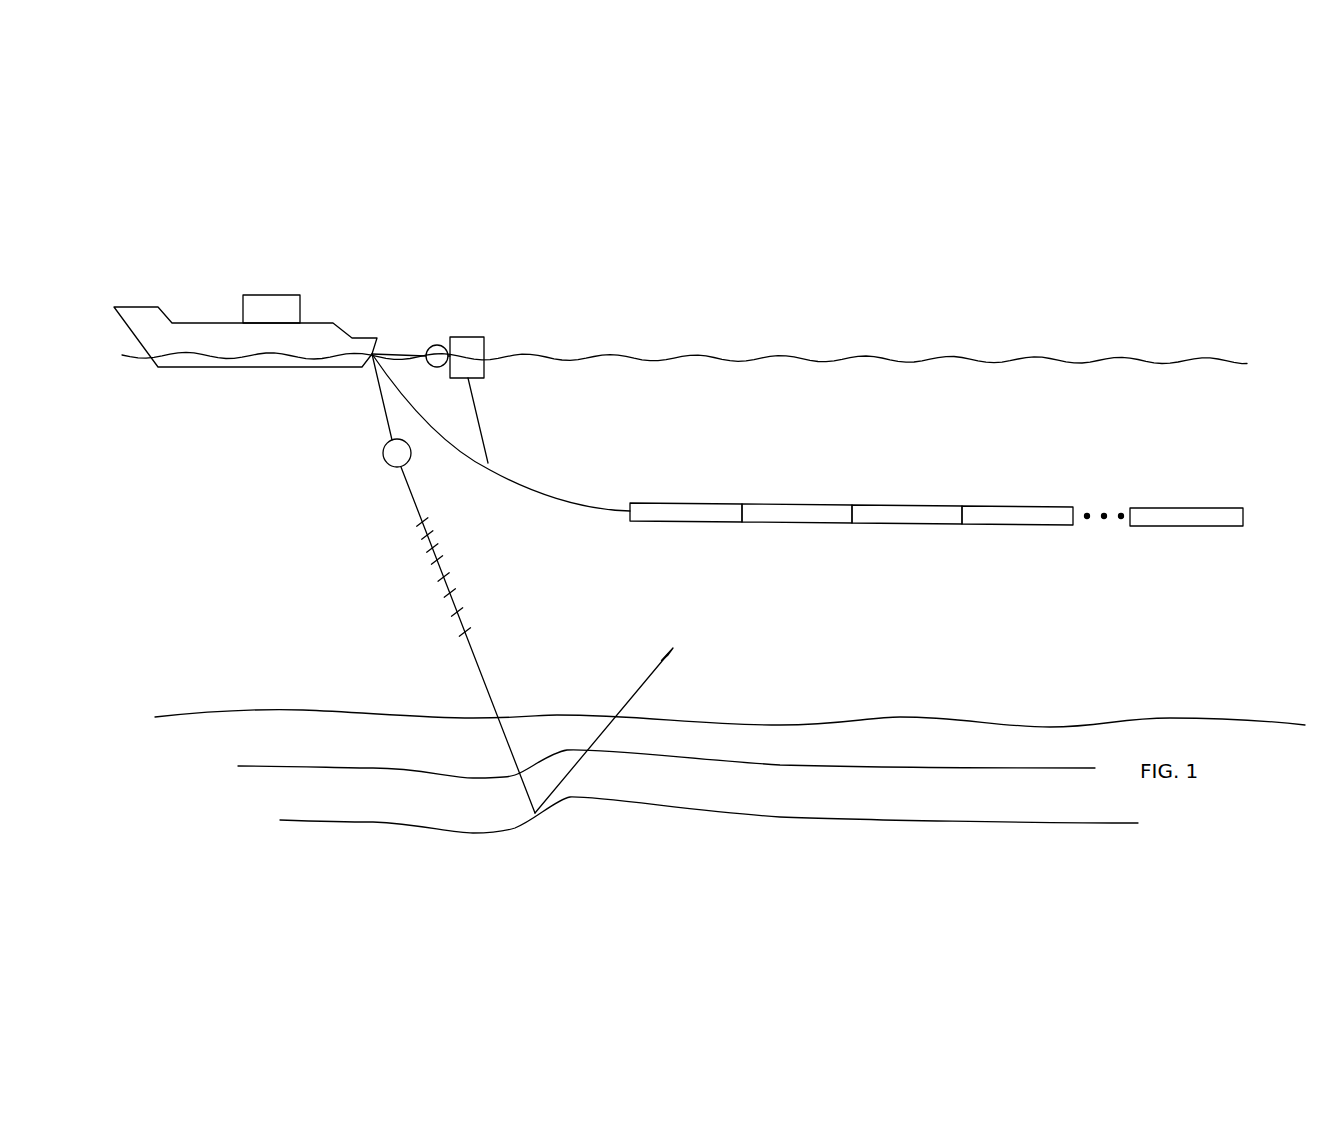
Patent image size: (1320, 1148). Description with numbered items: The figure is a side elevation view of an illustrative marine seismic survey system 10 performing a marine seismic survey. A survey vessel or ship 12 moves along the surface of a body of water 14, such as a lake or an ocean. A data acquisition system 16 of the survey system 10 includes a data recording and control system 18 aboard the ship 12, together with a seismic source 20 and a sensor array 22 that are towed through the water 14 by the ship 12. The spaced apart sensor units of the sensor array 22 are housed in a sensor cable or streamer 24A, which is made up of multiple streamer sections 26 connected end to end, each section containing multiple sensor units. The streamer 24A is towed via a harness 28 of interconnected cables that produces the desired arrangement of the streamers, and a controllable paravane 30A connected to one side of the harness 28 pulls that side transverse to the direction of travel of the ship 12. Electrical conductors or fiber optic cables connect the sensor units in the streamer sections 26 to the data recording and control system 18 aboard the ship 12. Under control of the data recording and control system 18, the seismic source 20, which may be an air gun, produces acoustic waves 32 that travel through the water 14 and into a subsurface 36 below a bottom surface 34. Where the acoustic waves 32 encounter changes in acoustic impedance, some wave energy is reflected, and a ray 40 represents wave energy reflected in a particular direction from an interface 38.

The marine seismic survey system 10 is at (847, 182).
The survey vessel or ship 12 is at (188, 323).
The body of water 14 is at (228, 473).
The data acquisition system 16 is at (650, 240).
The data recording and control system 18 is at (270, 295).
The seismic source 20 is at (400, 470).
The sensor array 22 is at (926, 512).
The streamer 24A is at (513, 485).
The streamer sections 26 is at (652, 522).
The harness 28 is at (408, 295).
The paravane 30A is at (467, 337).
The acoustic waves 32 is at (432, 555).
The bottom surface 34 is at (303, 710).
The subsurface 36 is at (278, 748).
The interface 38 is at (655, 802).
The ray 40 is at (640, 687).